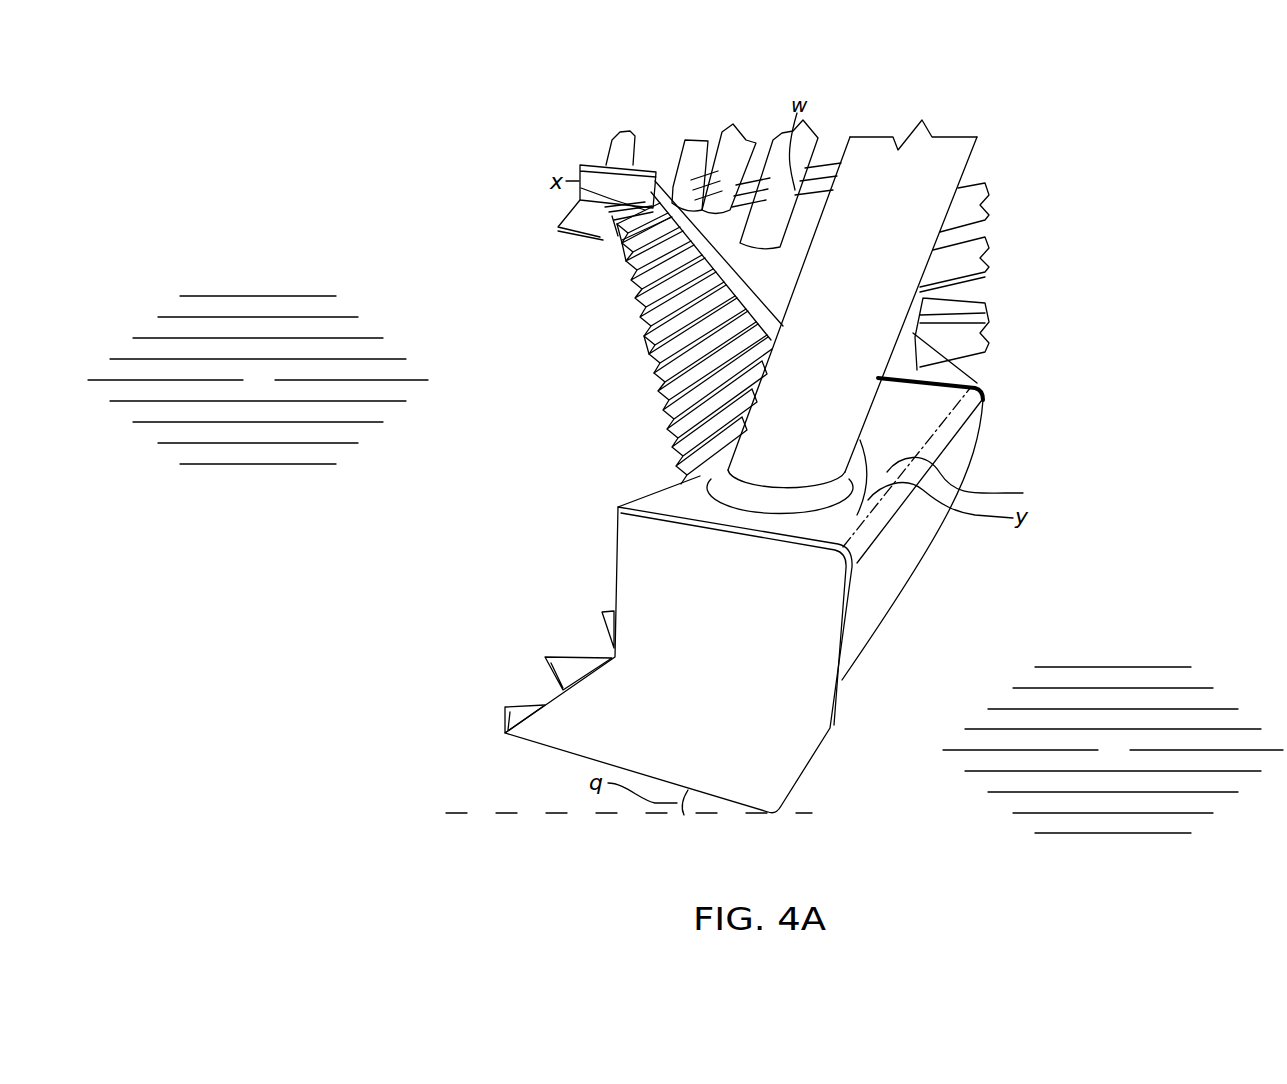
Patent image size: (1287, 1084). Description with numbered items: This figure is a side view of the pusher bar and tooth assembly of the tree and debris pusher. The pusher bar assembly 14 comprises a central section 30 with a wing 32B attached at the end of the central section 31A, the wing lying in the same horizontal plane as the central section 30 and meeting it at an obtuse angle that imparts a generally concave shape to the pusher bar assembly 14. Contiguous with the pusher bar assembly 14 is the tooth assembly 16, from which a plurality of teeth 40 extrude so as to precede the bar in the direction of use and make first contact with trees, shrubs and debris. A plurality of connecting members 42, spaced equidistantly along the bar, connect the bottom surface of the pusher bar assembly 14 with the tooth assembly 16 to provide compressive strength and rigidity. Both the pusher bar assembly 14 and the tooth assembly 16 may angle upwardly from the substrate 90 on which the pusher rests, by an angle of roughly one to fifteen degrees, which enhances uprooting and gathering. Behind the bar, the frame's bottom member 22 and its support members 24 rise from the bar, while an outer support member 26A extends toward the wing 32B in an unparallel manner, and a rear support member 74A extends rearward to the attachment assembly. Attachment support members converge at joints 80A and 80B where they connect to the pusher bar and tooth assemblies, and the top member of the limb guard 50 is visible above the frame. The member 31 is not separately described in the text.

The pusher bar assembly 14 is at (650, 492).
The tooth assembly 16 is at (641, 304).
The bottom member 22 is at (797, 262).
The support members 24 is at (740, 146).
The outer support member 26A is at (960, 170).
The central section 30 is at (712, 150).
The beam 31 is at (656, 176).
The end of the central section 31A is at (975, 370).
The wing 32B is at (636, 168).
The teeth 40 is at (637, 330).
The connecting members 42 is at (700, 400).
The top member of the limb guard 50 is at (622, 285).
The rear support member 74A is at (930, 299).
The joint 80A is at (643, 350).
The joint 80B is at (625, 273).
The substrate 90 is at (685, 564).